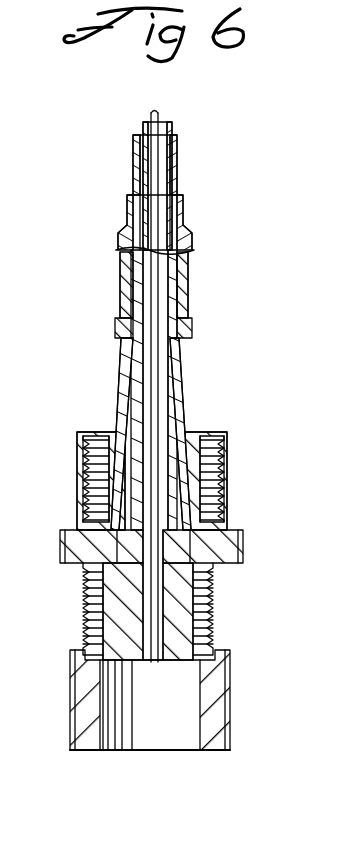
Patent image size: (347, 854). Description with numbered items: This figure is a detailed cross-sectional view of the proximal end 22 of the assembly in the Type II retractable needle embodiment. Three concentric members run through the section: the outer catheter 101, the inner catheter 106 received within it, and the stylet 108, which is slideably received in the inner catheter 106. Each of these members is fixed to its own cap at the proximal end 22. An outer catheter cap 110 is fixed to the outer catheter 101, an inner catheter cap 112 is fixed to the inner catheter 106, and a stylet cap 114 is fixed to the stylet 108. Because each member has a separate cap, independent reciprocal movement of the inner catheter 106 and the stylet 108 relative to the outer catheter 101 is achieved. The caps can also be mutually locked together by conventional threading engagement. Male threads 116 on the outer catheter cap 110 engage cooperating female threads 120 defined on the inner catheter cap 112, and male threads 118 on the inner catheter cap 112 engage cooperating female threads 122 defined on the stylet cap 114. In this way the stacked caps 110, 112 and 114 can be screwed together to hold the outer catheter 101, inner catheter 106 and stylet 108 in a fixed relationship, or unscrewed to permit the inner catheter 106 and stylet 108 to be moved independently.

The proximal end 22 is at (228, 279).
The outer catheter 101 is at (137, 177).
The inner catheter 106 is at (168, 163).
The stylet 108 is at (163, 192).
The outer catheter cap 110 is at (185, 388).
The inner catheter cap 112 is at (215, 500).
The stylet cap 114 is at (215, 705).
The male threads 116 is at (183, 542).
The male threads 118 is at (205, 632).
The female threads 120 is at (95, 472).
The female threads 122 is at (100, 601).